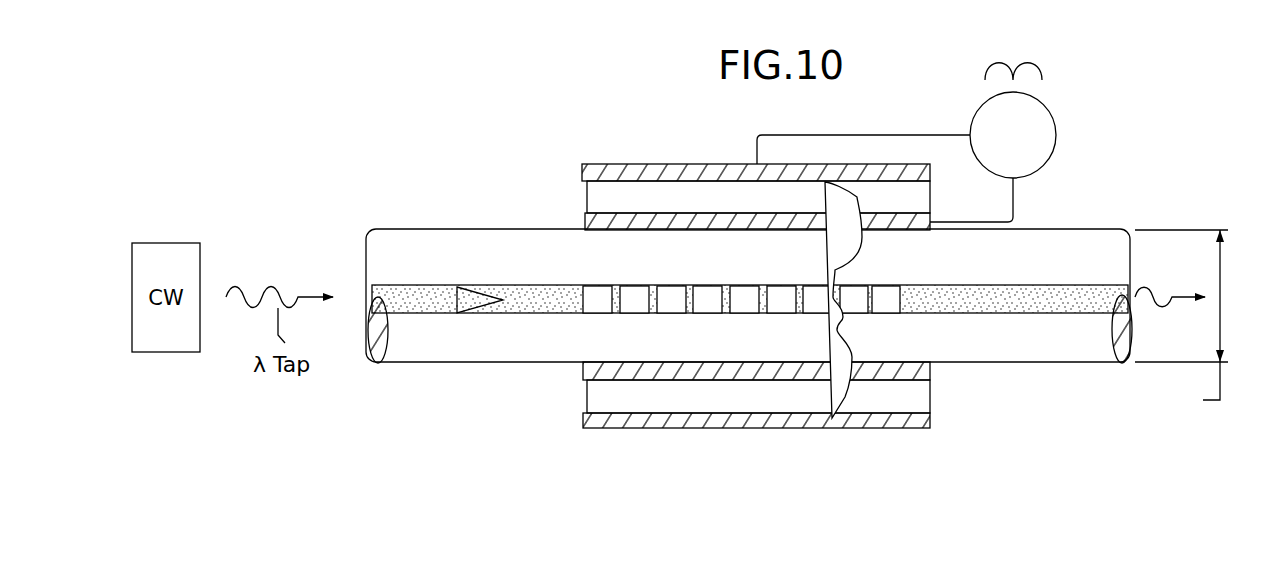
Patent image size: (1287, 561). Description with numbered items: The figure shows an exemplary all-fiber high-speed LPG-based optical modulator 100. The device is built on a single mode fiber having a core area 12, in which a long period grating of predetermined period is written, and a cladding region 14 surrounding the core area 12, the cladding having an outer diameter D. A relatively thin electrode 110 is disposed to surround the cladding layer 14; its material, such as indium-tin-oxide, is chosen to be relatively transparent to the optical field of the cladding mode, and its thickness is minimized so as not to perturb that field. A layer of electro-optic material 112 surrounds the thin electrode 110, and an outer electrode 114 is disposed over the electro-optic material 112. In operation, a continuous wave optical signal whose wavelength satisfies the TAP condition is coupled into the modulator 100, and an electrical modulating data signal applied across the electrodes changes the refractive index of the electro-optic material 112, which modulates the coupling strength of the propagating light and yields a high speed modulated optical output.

The modulator 100 is at (402, 137).
The core area 12 is at (1052, 355).
The cladding region 14 is at (1090, 232).
The thin electrode 110 is at (592, 221).
The electro-optic material 112 is at (592, 190).
The outer electrode 114 is at (646, 168).